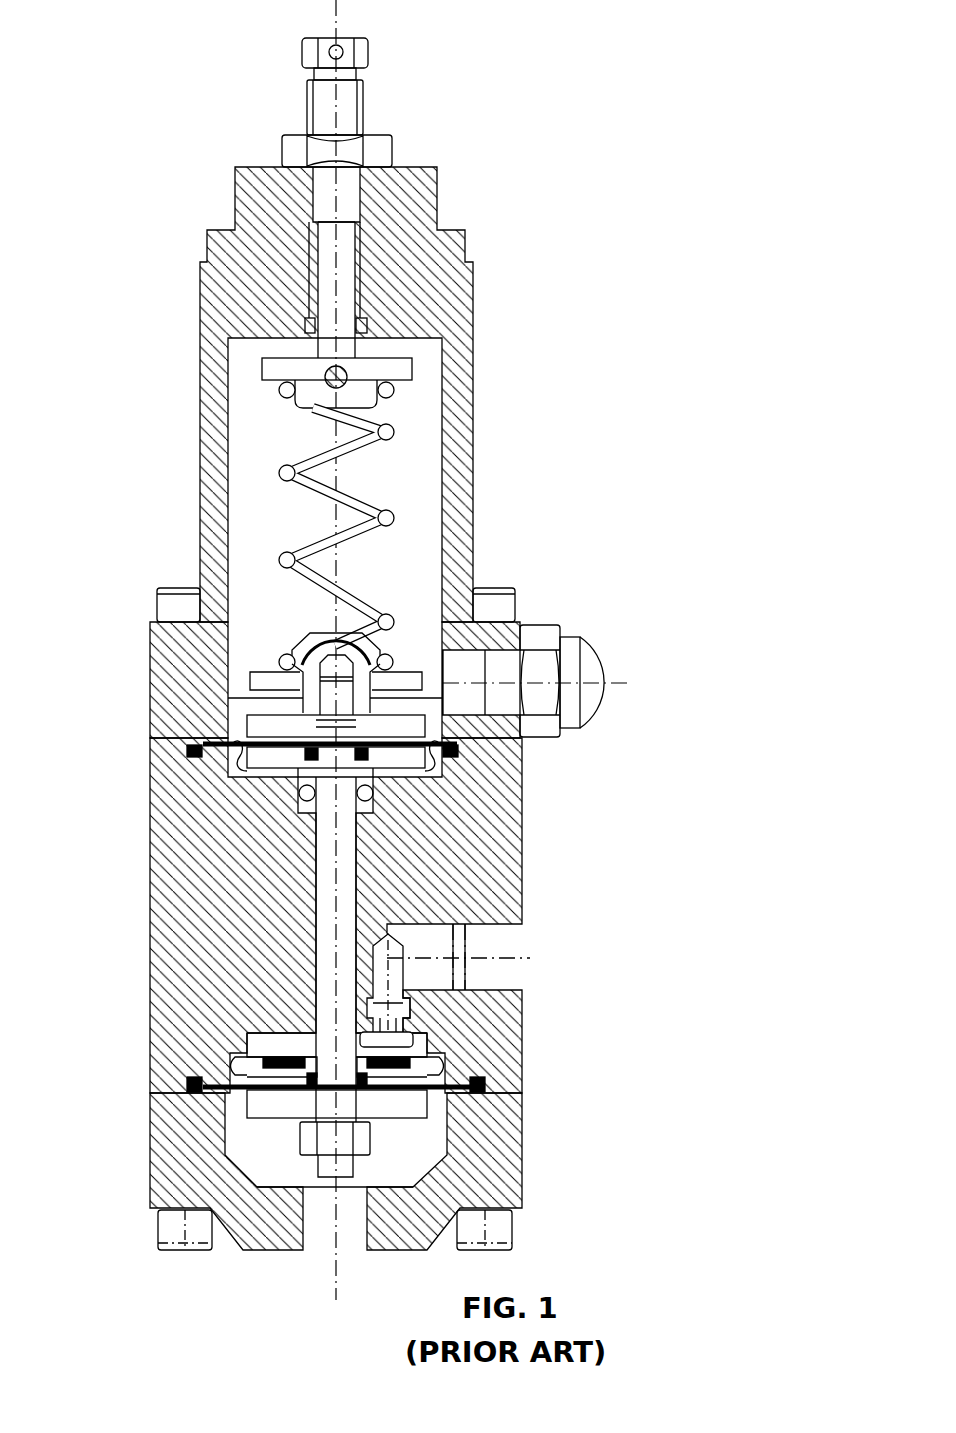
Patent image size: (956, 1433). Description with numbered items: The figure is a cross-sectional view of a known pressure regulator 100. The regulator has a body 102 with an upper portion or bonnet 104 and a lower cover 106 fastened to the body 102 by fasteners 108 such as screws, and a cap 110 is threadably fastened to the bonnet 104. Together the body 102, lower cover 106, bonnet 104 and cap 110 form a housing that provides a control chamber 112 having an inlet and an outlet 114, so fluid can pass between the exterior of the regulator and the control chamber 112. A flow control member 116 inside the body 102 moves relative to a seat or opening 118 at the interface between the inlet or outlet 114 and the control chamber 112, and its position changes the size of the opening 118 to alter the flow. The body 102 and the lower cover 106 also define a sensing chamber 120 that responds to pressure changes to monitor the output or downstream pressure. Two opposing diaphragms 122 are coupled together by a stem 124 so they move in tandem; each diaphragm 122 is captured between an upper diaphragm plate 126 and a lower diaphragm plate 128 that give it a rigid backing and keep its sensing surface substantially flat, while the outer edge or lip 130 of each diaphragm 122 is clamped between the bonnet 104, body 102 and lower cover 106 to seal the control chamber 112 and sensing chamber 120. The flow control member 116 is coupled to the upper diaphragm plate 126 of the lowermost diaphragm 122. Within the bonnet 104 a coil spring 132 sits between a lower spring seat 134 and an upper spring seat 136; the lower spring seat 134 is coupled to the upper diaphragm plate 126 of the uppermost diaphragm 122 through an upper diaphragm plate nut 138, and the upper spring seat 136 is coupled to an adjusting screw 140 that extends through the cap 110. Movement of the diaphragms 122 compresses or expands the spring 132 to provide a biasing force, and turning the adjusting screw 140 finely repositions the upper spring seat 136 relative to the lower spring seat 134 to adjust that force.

The pressure regulator 100 is at (570, 46).
The body 102 is at (150, 832).
The bonnet 104 is at (152, 678).
The lower cover 106 is at (165, 1206).
The fasteners 108 is at (172, 588).
The cap 110 is at (235, 168).
The control chamber 112 is at (230, 1075).
The outlet 114 is at (407, 930).
The flow control member 116 is at (405, 1003).
The seat or opening 118 is at (360, 1025).
The sensing chamber 120 is at (268, 1150).
The diaphragm 122 is at (442, 752).
The stem 124 is at (358, 890).
The upper diaphragm plate 126 is at (262, 715).
The lower diaphragm plate 128 is at (245, 775).
The outer edge or lip 130 is at (190, 745).
The spring 132 is at (386, 392).
The lower spring seat 134 is at (262, 672).
The upper spring seat 136 is at (262, 372).
The upper diaphragm plate nut 138 is at (378, 656).
The adjusting screw 140 is at (357, 283).